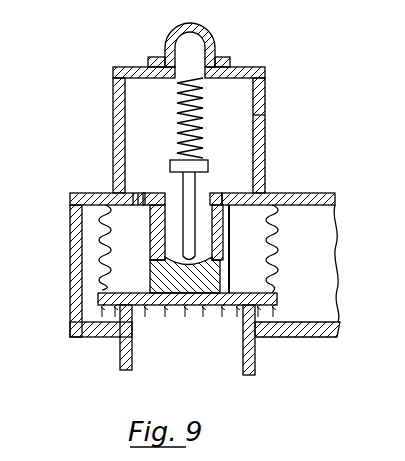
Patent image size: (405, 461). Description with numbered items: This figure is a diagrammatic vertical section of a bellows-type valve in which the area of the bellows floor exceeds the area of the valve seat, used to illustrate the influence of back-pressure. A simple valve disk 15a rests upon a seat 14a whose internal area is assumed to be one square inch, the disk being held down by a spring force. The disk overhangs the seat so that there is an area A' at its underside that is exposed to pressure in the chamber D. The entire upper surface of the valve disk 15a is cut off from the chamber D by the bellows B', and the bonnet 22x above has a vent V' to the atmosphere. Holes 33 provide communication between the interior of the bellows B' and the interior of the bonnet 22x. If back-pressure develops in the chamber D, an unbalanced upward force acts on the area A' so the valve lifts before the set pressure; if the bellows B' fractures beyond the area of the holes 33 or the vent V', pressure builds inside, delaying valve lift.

The bonnet 22x is at (263, 90).
The vent V' is at (211, 169).
The holes 33 is at (243, 192).
The chamber D is at (294, 257).
The bellows B' is at (84, 265).
The valve disk 15a is at (100, 293).
The seat 14a is at (132, 318).
The area at underside of disk A' is at (291, 342).